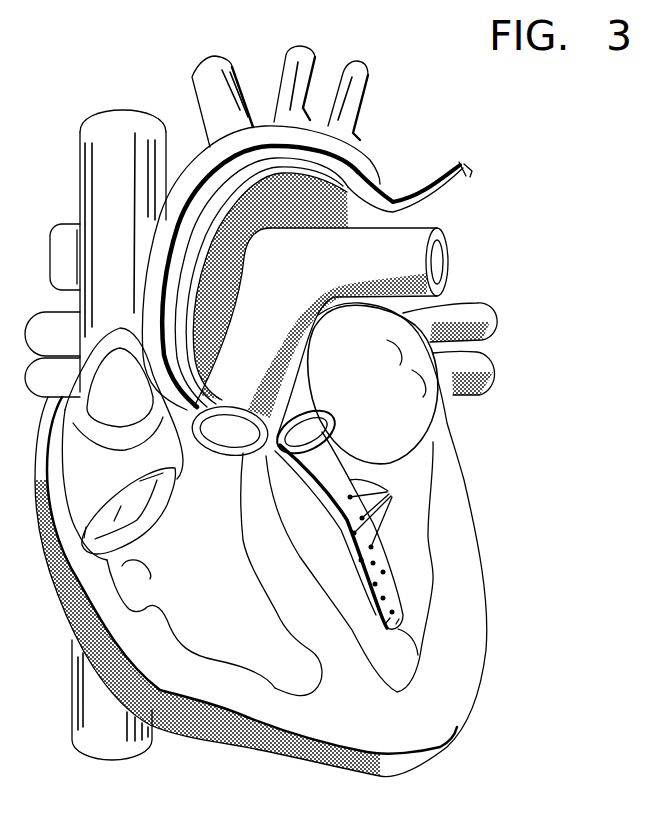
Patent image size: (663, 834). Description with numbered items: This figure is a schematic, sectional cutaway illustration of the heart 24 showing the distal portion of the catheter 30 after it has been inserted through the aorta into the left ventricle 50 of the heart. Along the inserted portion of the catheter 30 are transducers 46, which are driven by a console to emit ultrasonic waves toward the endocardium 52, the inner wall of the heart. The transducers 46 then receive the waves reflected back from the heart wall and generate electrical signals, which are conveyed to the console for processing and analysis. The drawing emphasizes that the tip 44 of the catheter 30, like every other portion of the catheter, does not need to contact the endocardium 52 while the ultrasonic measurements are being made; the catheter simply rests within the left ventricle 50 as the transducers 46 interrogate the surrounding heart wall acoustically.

The heart 24 is at (270, 730).
The catheter 30 is at (417, 196).
The tip 44 is at (420, 657).
The transducers 46 is at (392, 497).
The left ventricle 50 is at (414, 551).
The endocardium 52 is at (430, 575).